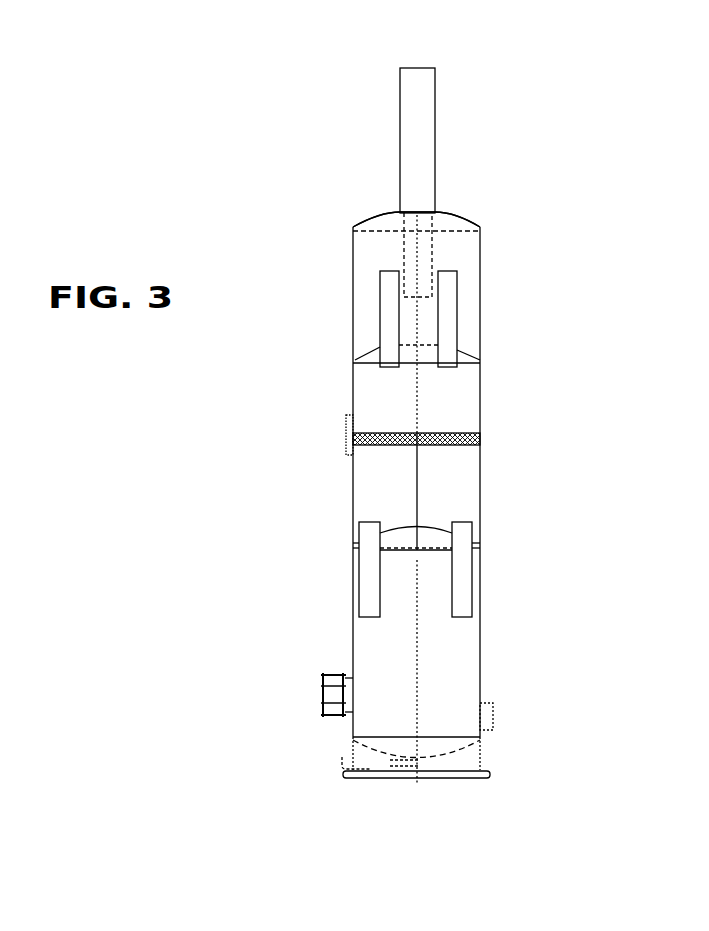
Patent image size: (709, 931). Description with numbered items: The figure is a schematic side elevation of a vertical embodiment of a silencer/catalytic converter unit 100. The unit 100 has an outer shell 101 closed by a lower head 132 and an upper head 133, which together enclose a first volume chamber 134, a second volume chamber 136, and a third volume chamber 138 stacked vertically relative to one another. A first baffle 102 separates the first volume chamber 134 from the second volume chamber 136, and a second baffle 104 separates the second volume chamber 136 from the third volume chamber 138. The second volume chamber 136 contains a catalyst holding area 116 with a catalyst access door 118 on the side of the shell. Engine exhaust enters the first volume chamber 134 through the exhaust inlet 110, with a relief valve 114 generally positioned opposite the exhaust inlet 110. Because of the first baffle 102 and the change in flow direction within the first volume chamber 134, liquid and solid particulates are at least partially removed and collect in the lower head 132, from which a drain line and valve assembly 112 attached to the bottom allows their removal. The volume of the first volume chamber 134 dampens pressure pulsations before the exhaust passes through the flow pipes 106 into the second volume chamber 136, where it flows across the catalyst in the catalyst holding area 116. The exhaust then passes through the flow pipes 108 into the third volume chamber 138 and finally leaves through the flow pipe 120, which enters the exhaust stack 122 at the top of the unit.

The silencer/catalytic converter unit 100 is at (567, 165).
The outer shell 101 is at (478, 660).
The first baffle 102 is at (428, 535).
The second baffle 104 is at (463, 363).
The flow pipes 106 is at (366, 585).
The flow pipes 108 is at (392, 340).
The exhaust inlet 110 is at (493, 708).
The drain line and valve assembly 112 is at (342, 757).
The relief valve 114 is at (337, 695).
The catalyst holding area 116 is at (505, 452).
The catalyst access door 118 is at (348, 440).
The flow pipe 120 is at (412, 250).
The exhaust stack 122 is at (417, 117).
The lower head 132 is at (452, 747).
The upper head 133 is at (467, 217).
The first volume chamber 134 is at (366, 658).
The second volume chamber 136 is at (367, 488).
The third volume chamber 138 is at (367, 265).